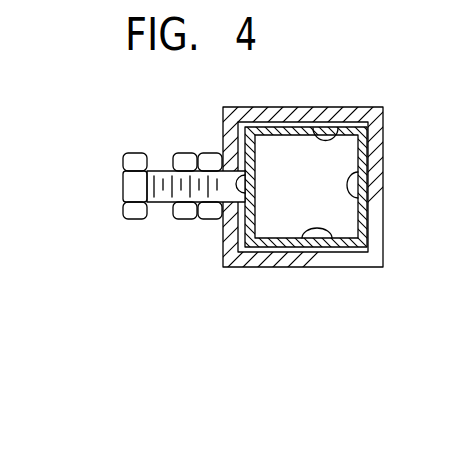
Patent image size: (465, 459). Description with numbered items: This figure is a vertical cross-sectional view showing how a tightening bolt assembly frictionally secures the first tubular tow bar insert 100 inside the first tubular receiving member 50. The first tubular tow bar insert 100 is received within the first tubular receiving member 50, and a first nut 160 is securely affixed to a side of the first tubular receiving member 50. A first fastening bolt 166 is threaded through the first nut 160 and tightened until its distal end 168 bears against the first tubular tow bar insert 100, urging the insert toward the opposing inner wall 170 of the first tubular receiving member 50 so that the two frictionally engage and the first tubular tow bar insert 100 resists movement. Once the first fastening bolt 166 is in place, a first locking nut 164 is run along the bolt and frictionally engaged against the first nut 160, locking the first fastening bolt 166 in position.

The first tubular receiving member 50 is at (313, 118).
The first tubular tow bar insert 100 is at (338, 128).
The first nut 160 is at (194, 179).
The first locking nut 164 is at (181, 153).
The first fastening bolt 166 is at (133, 153).
The distal end 168 is at (243, 183).
The opposing inner wall 170 is at (360, 177).